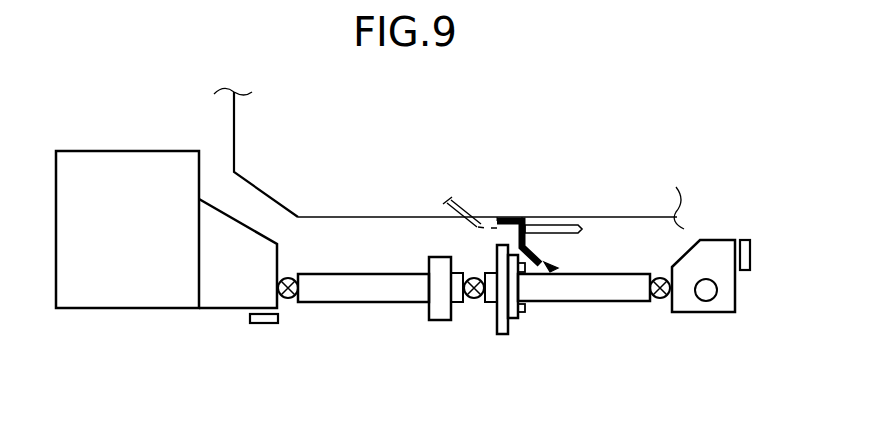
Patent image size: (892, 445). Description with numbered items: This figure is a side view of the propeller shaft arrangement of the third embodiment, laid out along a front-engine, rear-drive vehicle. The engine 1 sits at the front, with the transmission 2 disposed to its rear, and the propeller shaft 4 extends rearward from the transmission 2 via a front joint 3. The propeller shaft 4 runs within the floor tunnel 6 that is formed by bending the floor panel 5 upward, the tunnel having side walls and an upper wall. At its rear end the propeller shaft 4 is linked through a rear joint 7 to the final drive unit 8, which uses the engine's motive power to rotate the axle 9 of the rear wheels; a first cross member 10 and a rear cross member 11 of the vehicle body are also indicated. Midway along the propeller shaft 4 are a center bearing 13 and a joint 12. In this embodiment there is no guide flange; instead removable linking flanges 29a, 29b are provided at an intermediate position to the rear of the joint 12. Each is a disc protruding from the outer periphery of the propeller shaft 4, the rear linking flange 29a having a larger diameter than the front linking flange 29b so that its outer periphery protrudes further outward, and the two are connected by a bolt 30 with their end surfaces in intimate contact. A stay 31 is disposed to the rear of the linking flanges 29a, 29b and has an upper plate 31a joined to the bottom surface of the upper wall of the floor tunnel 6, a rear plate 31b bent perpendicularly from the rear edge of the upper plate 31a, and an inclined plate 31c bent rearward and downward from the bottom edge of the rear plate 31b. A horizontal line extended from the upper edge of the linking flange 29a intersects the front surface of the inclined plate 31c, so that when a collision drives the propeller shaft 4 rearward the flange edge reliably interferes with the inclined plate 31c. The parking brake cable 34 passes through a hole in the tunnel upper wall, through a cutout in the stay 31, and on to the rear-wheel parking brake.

The engine 1 is at (104, 150).
The transmission 2 is at (220, 309).
The front joint 3 is at (290, 300).
The propeller shaft 4 is at (372, 303).
The floor panel 5 is at (584, 287).
The floor tunnel 6 is at (351, 215).
The rear joint 7 is at (659, 300).
The final drive unit 8 is at (712, 240).
The axle 9 is at (706, 301).
The first cross member 10 is at (258, 325).
The rear cross member 11 is at (752, 252).
The joint 12 is at (474, 301).
The center bearing 13 is at (438, 322).
The rear linking flange 29a is at (503, 336).
The front linking flange 29b is at (515, 320).
The bolt 30 is at (525, 310).
The stay 31 is at (558, 270).
The upper plate 31a is at (506, 215).
The rear plate 31b is at (537, 216).
The inclined plate 31c is at (556, 262).
The parking brake cable 34 is at (568, 217).